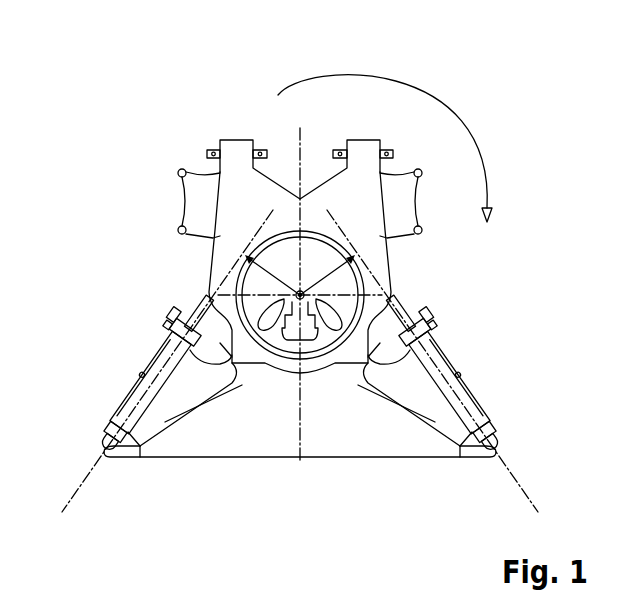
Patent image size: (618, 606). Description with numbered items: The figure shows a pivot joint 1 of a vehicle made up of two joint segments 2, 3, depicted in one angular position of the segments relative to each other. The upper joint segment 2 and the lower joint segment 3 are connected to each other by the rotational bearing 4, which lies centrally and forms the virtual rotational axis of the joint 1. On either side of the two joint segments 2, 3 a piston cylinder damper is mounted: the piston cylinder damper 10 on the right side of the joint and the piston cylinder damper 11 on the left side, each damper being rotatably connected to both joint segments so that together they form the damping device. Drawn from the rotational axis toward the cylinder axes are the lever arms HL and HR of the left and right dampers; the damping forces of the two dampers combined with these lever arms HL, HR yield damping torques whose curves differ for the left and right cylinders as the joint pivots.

The joint 1 is at (376, 110).
The joint segment 2 is at (232, 202).
The joint segment 3 is at (330, 447).
The rotational bearing 4 is at (243, 289).
The piston cylinder damper 10 is at (470, 398).
The piston cylinder damper 11 is at (123, 408).
The lever arm HL is at (243, 284).
The lever arm HR is at (357, 264).